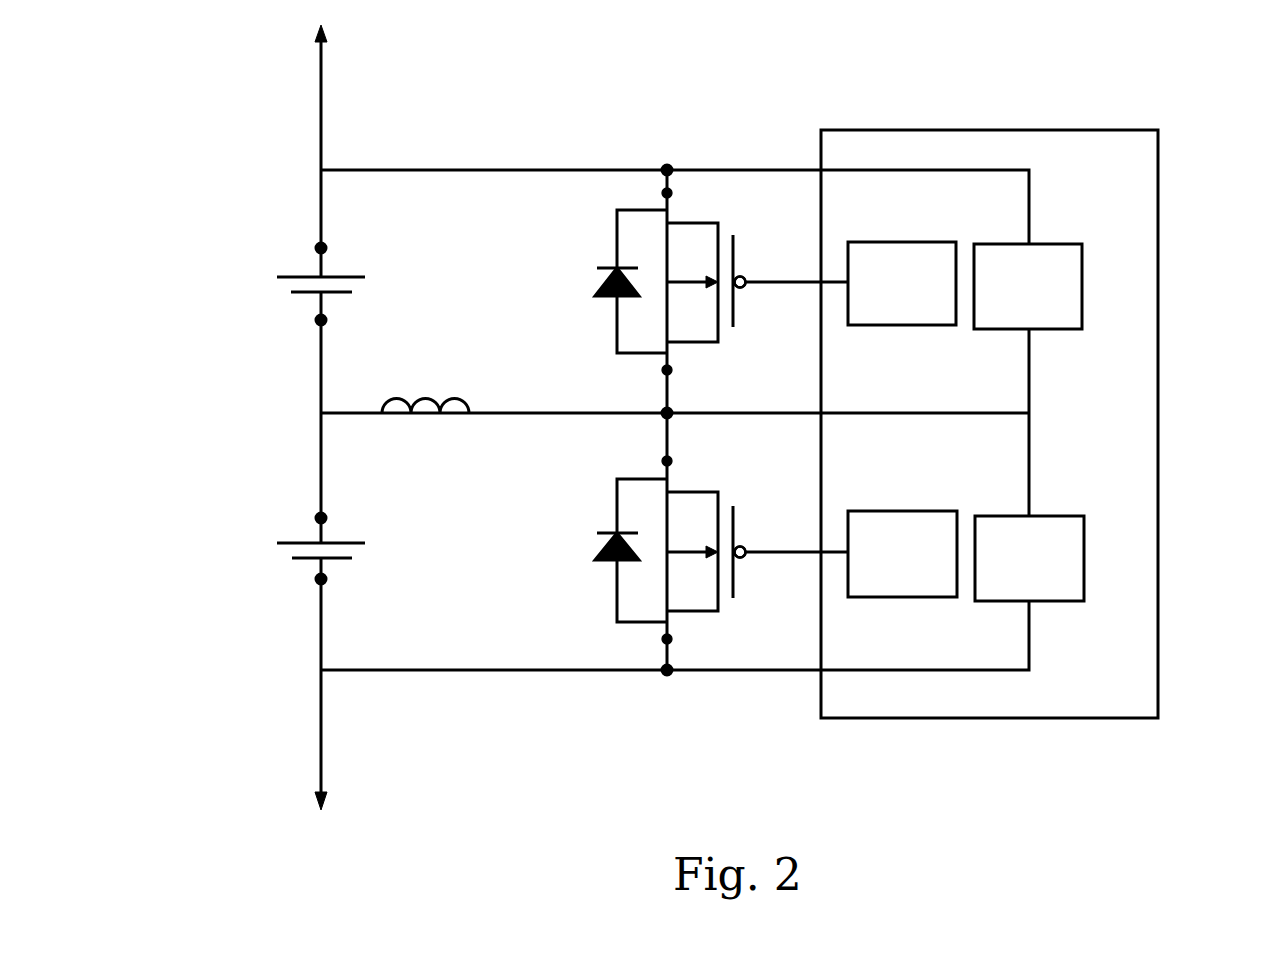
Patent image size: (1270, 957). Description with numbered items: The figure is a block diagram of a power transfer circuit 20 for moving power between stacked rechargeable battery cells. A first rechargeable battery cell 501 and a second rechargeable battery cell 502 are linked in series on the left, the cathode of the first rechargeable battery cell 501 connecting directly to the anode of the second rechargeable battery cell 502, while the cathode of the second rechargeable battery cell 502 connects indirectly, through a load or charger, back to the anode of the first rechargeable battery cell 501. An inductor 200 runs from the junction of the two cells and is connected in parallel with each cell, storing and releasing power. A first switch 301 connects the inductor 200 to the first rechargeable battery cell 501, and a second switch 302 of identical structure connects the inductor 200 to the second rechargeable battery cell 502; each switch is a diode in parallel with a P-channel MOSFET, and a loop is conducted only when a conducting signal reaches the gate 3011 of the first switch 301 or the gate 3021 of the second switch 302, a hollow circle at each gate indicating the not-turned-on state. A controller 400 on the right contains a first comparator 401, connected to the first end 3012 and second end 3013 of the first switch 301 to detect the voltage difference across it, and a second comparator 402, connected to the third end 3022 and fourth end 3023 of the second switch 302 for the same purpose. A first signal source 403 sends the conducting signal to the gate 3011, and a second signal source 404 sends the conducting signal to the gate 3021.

The power transfer circuit 20 is at (1265, 198).
The inductor 200 is at (452, 403).
The first switch 301 is at (617, 250).
The gate 3011 is at (746, 287).
The first end 3012 is at (667, 193).
The second end 3013 is at (667, 372).
The second switch 302 is at (617, 520).
The gate 3021 is at (746, 557).
The third end 3022 is at (667, 461).
The fourth end 3023 is at (667, 639).
The controller 400 is at (1158, 530).
The first comparator 401 is at (997, 309).
The second comparator 402 is at (999, 578).
The first signal source 403 is at (871, 307).
The second signal source 404 is at (871, 575).
The first rechargeable battery cell 501 is at (292, 277).
The second rechargeable battery cell 502 is at (292, 543).